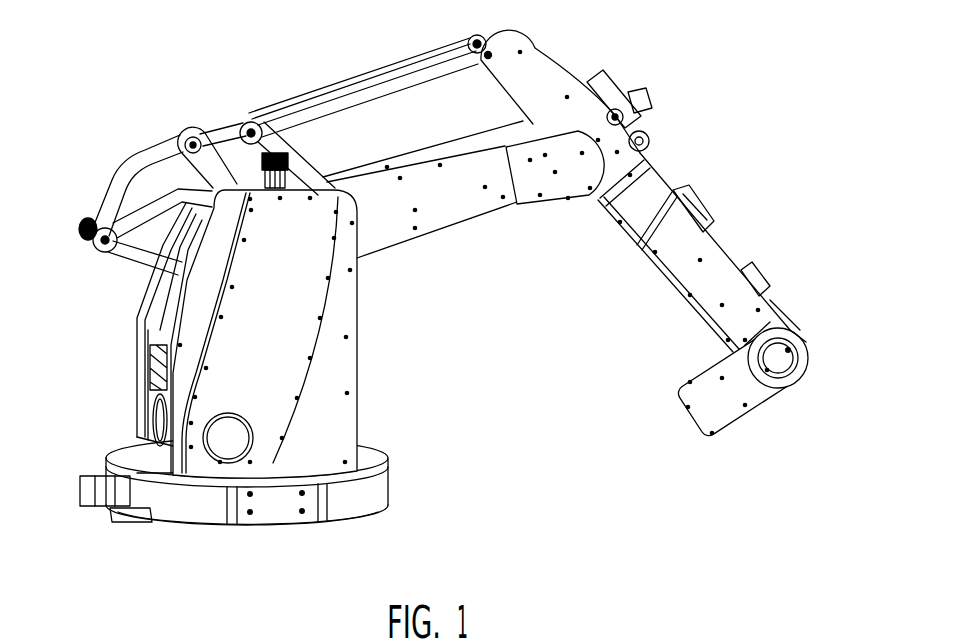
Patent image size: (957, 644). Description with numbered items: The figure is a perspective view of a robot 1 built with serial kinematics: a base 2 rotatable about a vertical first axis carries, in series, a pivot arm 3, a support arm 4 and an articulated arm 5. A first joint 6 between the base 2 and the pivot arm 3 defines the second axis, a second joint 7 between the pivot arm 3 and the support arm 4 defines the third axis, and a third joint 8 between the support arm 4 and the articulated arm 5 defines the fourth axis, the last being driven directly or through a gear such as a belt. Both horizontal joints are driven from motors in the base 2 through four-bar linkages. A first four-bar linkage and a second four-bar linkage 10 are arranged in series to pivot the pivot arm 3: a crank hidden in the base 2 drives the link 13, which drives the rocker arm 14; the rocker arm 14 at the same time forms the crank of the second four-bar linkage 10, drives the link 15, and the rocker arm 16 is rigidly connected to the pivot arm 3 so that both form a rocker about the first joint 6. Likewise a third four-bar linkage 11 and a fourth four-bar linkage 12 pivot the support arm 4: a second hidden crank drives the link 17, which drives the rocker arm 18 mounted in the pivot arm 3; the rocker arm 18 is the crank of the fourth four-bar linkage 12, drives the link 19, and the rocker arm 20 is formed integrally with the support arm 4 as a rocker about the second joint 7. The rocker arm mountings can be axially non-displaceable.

The robot 1 is at (460, 264).
The base 2 is at (346, 411).
The pivot arm 3 is at (465, 208).
The support arm 4 is at (680, 276).
The articulated arm 5 is at (771, 383).
The first joint 6 is at (343, 160).
The second joint 7 is at (577, 210).
The third joint 8 is at (822, 352).
The second four-bar linkage 10 is at (132, 191).
The third four-bar linkage 11 is at (243, 117).
The fourth four-bar linkage 12 is at (370, 73).
The link 13 is at (128, 256).
The rocker arm 14 is at (147, 196).
The link 15 is at (154, 162).
The rocker arm 16 is at (187, 139).
The link 17 is at (229, 134).
The rocker arm 18 is at (271, 130).
The link 19 is at (392, 82).
The rocker arm 20 is at (549, 72).